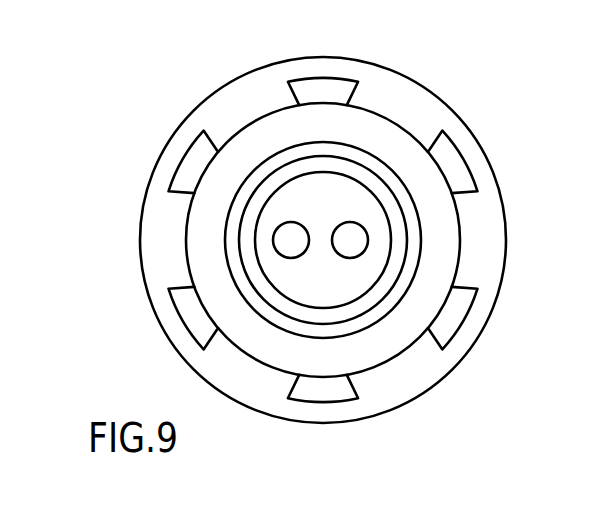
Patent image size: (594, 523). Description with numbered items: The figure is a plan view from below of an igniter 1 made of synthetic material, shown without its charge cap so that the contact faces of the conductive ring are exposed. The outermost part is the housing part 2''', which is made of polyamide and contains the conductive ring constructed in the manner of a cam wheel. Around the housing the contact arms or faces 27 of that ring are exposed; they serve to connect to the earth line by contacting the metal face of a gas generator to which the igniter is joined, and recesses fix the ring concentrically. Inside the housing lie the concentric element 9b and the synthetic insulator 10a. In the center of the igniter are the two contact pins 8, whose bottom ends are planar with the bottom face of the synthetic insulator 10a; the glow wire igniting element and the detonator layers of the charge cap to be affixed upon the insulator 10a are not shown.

The connector 1 is at (219, 57).
The housing part 2''' is at (351, 212).
The contact arms or faces 27 is at (466, 161).
The insert 9b is at (228, 233).
The synthetic insulator 10a is at (253, 250).
The contact pins 8 is at (349, 238).